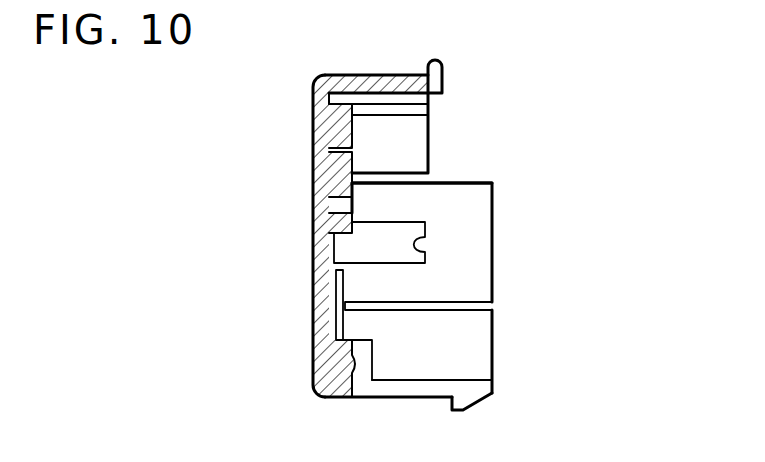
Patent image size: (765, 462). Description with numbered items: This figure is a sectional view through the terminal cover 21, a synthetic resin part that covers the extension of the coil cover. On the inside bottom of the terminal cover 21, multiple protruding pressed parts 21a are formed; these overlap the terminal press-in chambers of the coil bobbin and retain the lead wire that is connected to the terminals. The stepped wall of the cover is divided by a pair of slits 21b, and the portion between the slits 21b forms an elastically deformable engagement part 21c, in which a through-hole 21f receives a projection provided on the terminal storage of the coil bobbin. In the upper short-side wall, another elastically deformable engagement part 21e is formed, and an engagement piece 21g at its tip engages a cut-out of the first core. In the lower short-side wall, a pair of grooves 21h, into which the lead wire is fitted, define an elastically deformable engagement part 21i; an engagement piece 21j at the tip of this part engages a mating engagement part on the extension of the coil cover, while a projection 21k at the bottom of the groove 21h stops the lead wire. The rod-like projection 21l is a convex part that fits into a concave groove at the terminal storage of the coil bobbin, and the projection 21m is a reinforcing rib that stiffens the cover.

The terminal cover 21 is at (538, 147).
The protruding pressed parts 21a is at (333, 127).
The slits 21b is at (428, 178).
The engagement part 21c is at (480, 204).
The engagement part 21e is at (330, 77).
The through-hole 21f is at (440, 238).
The engagement piece 21g is at (440, 77).
The grooves 21h is at (365, 388).
The engagement part 21i is at (418, 385).
The engagement piece 21j is at (468, 403).
The projection 21k is at (372, 362).
The rod-like projection 21l is at (425, 111).
The reinforcing rib 21m is at (338, 303).